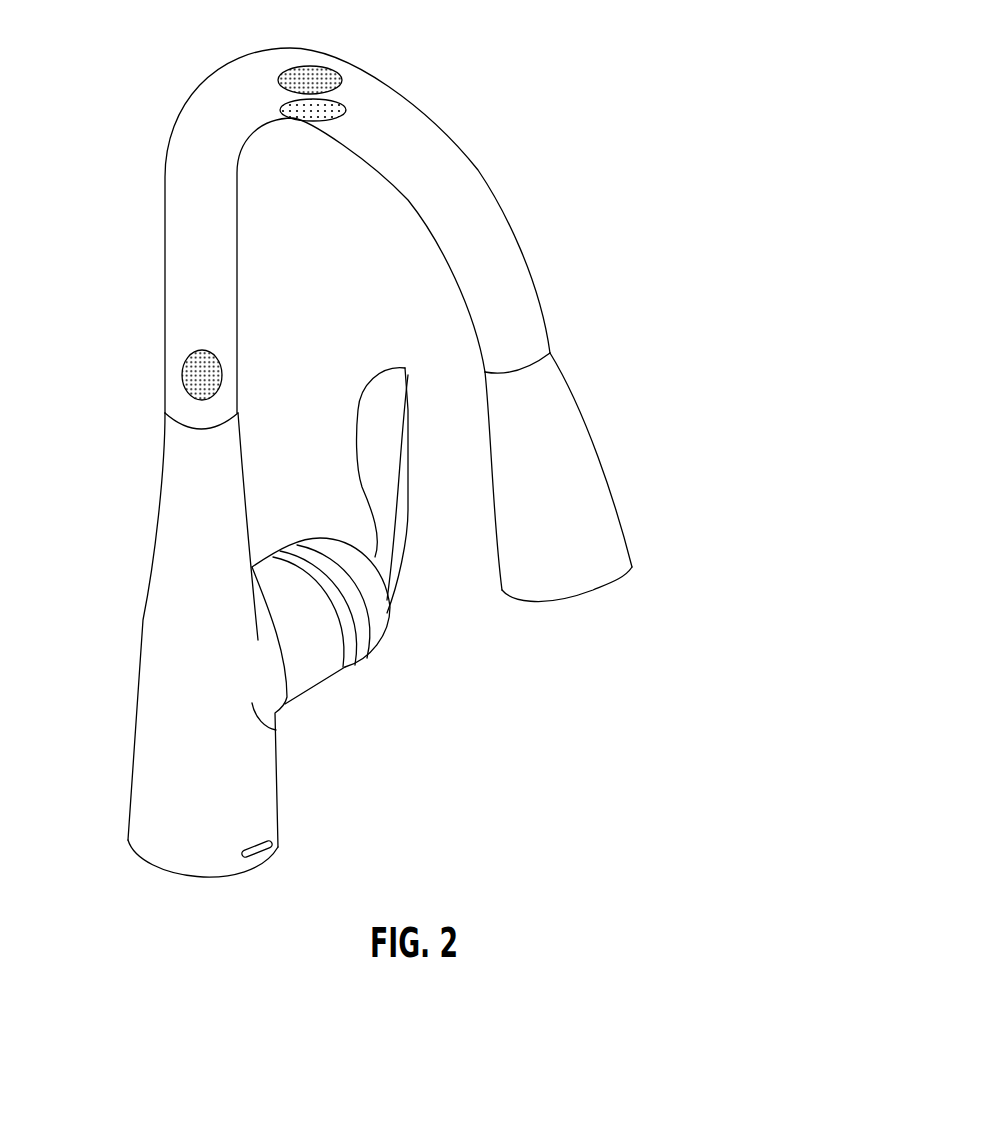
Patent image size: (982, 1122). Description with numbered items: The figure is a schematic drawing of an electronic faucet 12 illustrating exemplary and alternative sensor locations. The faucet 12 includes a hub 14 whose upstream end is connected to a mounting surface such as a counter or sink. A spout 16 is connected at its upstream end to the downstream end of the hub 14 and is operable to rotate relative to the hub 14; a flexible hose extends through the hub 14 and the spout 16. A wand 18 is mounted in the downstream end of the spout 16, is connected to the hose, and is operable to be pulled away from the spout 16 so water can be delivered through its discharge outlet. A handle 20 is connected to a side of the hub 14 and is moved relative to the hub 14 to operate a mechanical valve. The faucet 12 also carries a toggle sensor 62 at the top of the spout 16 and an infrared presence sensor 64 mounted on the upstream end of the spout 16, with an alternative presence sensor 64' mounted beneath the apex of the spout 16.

The electronic faucet 12 is at (360, 438).
The hub 14 is at (135, 663).
The spout 16 is at (165, 177).
The wand 18 is at (600, 458).
The handle 20 is at (377, 607).
The toggle sensor 62 is at (315, 66).
The presence sensor 64 is at (237, 363).
The presence sensor 64' is at (313, 139).